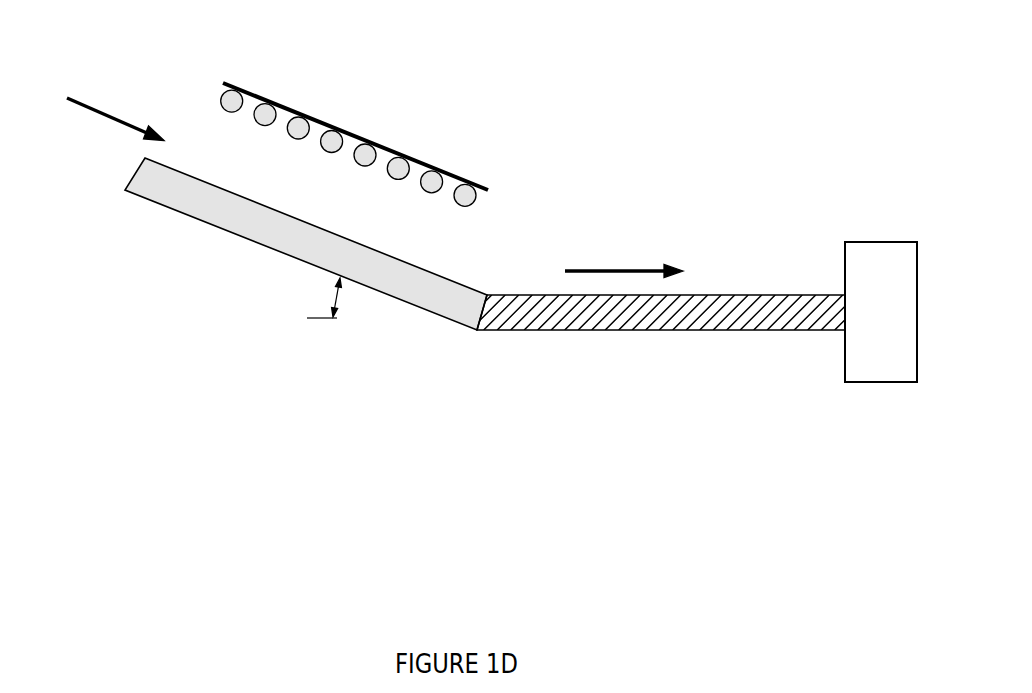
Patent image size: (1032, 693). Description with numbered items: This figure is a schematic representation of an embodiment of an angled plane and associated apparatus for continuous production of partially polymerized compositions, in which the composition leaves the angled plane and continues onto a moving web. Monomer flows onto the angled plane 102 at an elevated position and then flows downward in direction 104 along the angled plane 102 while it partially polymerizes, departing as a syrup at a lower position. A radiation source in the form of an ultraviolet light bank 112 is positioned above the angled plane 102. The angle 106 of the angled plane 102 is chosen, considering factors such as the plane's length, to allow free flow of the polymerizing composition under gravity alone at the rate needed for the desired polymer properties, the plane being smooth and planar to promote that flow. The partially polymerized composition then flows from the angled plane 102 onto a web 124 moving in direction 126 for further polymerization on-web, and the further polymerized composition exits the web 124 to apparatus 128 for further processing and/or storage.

The angled plane 102 is at (283, 233).
The direction 104 is at (98, 103).
The angle 106 is at (329, 320).
The ultraviolet light bank 112 is at (347, 128).
The web 124 is at (627, 313).
The direction 126 is at (624, 254).
The apparatus 128 is at (881, 312).